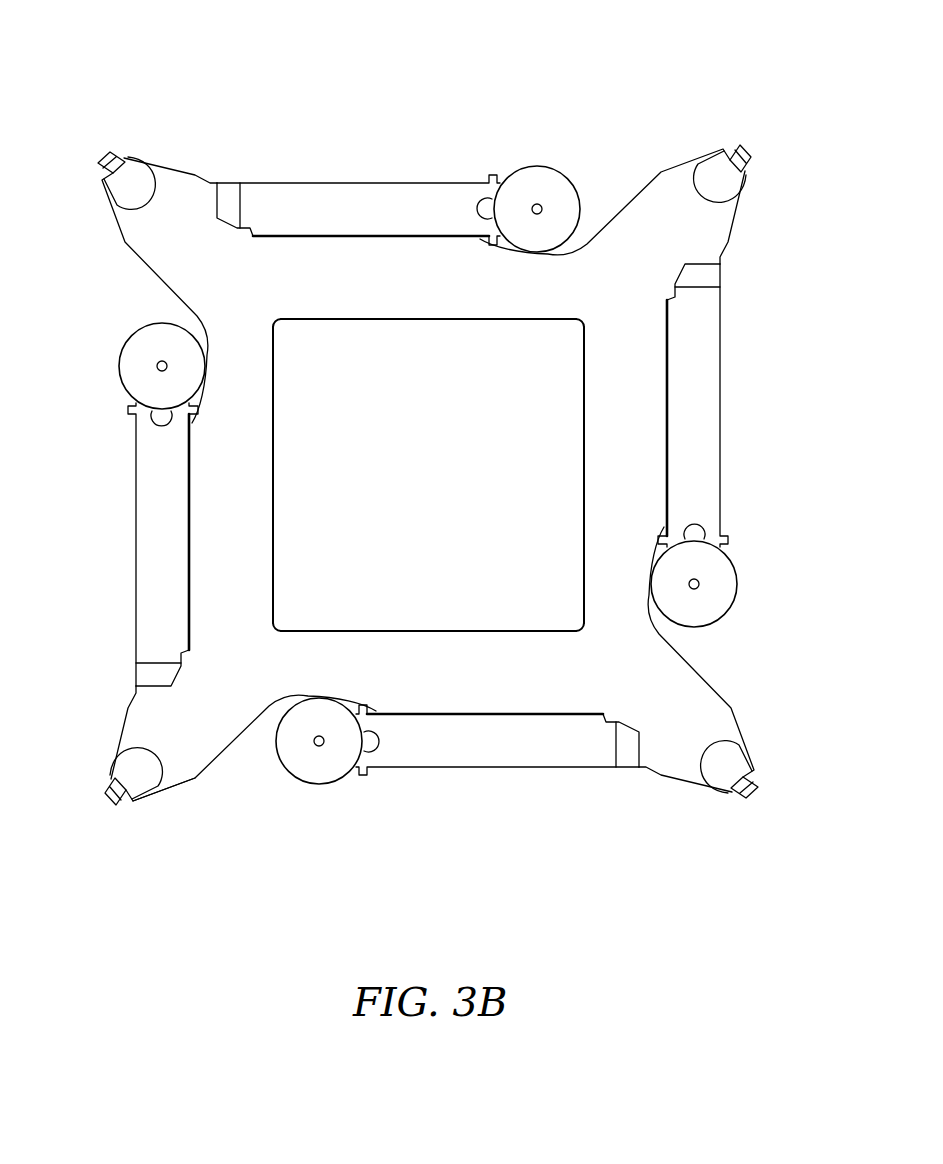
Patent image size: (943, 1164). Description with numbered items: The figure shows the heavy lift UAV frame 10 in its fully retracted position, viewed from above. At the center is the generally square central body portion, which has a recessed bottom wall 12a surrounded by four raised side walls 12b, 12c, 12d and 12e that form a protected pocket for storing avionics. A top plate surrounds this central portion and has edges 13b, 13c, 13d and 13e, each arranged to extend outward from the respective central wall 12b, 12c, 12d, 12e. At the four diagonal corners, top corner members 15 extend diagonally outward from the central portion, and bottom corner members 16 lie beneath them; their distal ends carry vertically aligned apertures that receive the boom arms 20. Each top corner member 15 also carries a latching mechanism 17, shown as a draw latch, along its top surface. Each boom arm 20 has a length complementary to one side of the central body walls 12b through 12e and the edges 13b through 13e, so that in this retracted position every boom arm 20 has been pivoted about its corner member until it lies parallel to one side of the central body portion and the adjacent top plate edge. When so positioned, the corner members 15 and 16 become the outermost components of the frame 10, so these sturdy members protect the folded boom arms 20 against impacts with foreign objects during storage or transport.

The heavy lift UAV frame 10 is at (207, 75).
The recessed bottom wall 12a is at (453, 491).
The raised side wall 12b is at (408, 332).
The raised side wall 12c is at (567, 434).
The raised side wall 12d is at (446, 618).
The raised side wall 12e is at (291, 505).
The top plate edge 13b is at (400, 286).
The top plate edge 13c is at (648, 478).
The top plate edge 13d is at (470, 701).
The top plate edge 13e is at (251, 445).
The top corner member 15 is at (185, 232).
The bottom corner member 16 is at (148, 807).
The latching mechanism 17 is at (110, 148).
The boom arm 20 is at (387, 164).